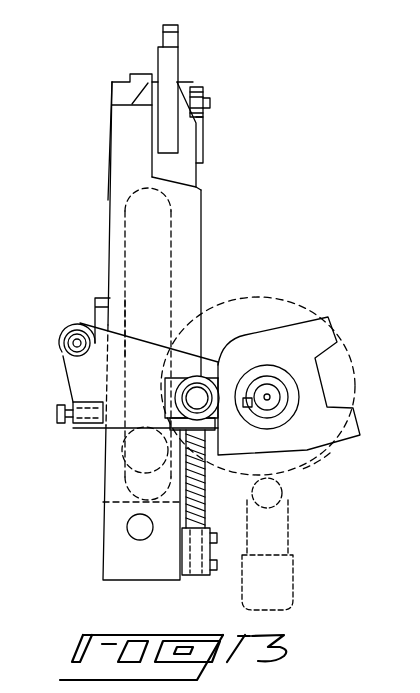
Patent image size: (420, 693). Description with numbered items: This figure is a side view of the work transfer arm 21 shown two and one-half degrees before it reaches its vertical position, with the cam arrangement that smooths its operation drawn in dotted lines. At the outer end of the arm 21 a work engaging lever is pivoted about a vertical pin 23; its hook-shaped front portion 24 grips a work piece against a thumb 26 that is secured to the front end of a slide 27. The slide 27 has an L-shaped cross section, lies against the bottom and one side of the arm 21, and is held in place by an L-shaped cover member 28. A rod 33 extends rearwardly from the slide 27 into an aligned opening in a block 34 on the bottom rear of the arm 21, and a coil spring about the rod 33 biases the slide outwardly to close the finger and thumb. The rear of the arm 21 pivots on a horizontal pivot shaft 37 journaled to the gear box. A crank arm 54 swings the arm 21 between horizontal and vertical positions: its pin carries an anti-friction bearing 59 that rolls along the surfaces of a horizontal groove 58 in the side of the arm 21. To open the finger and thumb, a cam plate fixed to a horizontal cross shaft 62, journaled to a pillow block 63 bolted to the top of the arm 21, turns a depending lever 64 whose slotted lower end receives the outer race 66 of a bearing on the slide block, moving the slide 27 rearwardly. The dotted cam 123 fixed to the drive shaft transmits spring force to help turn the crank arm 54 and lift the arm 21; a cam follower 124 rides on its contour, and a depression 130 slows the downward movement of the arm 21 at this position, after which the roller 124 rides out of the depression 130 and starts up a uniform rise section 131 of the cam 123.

The arm 21 is at (103, 508).
The vertical pin 23 is at (211, 104).
The front or outwardly projecting portion 24 is at (182, 35).
The thumb 26 is at (180, 64).
The slide 27 is at (200, 178).
The cover member 28 is at (110, 180).
The rod 33 is at (205, 470).
The block 34 is at (192, 577).
The horizontal pivot shaft 37 is at (128, 538).
The crank arm 54 is at (334, 327).
The horizontal groove 58 is at (176, 249).
The anti-friction bearing 59 is at (118, 458).
The horizontal cross shaft 62 is at (68, 360).
The pillow block 63 is at (93, 305).
The depending lever 64 is at (132, 333).
The outer race 66 is at (221, 355).
The cam 123 is at (292, 299).
The cam follower 124 is at (288, 528).
The depression 130 is at (288, 497).
The uniform rise section 131 is at (330, 455).